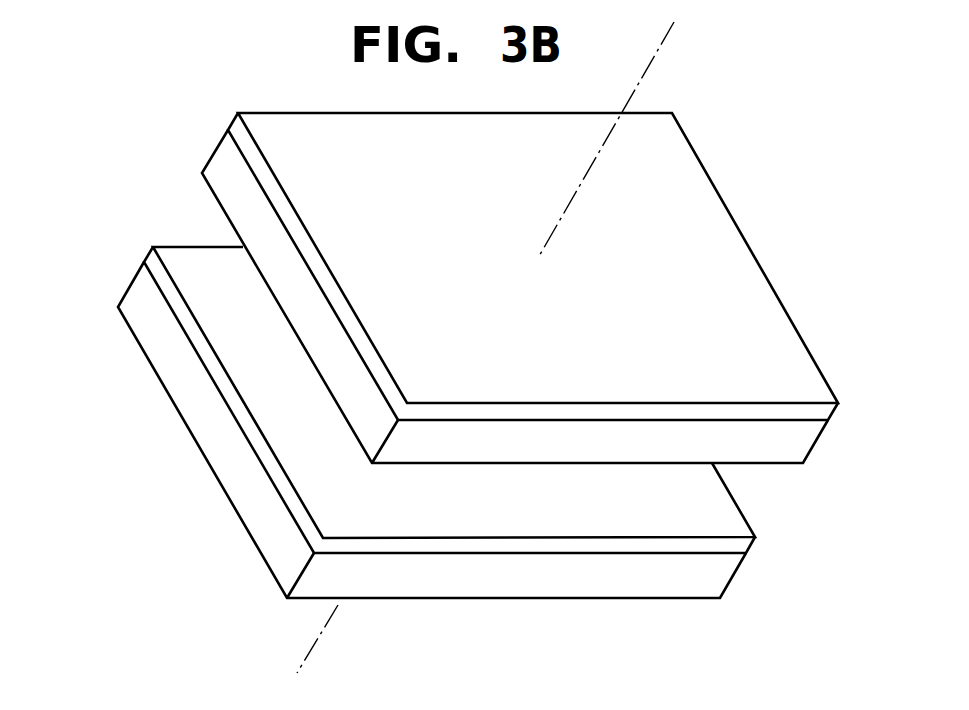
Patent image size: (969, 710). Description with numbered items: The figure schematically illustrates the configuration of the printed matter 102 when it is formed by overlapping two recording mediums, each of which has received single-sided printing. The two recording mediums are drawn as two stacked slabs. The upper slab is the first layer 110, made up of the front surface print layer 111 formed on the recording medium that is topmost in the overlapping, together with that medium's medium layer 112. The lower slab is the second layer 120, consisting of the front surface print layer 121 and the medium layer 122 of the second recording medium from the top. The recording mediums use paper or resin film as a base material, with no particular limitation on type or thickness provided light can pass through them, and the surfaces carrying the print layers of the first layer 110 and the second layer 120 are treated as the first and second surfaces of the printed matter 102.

The printed matter 102 is at (449, 326).
The first layer 110 is at (476, 255).
The front surface print layer 111 is at (233, 113).
The medium layer 112 is at (491, 282).
The second layer 120 is at (392, 389).
The front surface print layer 121 is at (150, 250).
The medium layer 122 is at (408, 416).